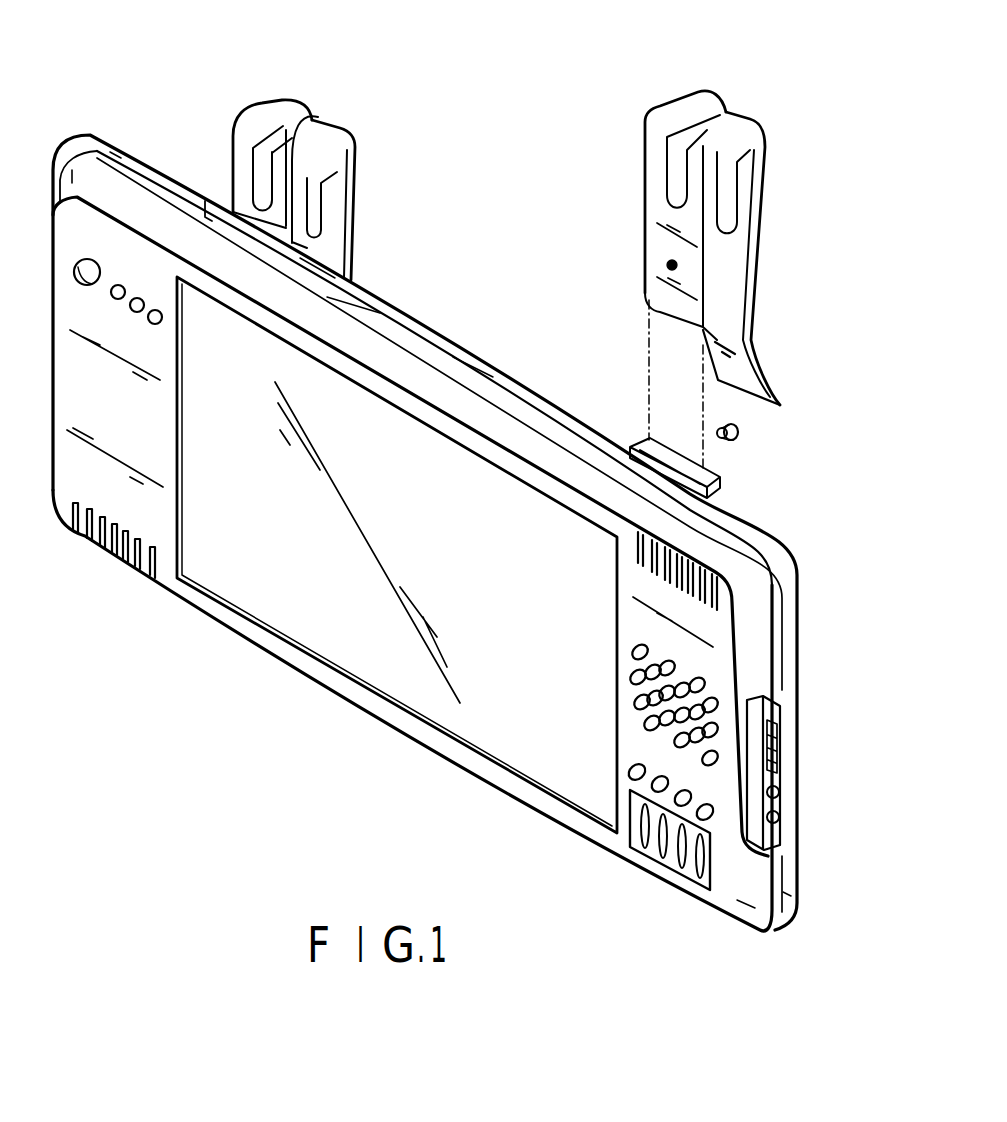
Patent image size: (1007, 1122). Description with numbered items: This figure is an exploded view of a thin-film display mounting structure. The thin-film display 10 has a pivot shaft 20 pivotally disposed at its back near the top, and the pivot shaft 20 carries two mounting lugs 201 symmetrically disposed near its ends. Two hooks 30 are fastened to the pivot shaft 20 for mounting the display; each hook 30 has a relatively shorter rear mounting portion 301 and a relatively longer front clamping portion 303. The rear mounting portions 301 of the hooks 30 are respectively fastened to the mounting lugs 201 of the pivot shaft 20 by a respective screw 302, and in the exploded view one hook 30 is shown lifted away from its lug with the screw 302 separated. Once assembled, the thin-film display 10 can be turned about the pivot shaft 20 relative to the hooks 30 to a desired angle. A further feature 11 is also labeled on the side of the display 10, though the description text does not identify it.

The thin-film display 10 is at (367, 657).
The connector / socket 11 is at (778, 773).
The pivot shaft 20 is at (405, 327).
The mounting lug 201 is at (663, 457).
The hook 30 is at (511, 247).
The rear mounting portion 301 is at (237, 175).
The screw 302 is at (742, 441).
The front clamping portion 303 is at (347, 192).